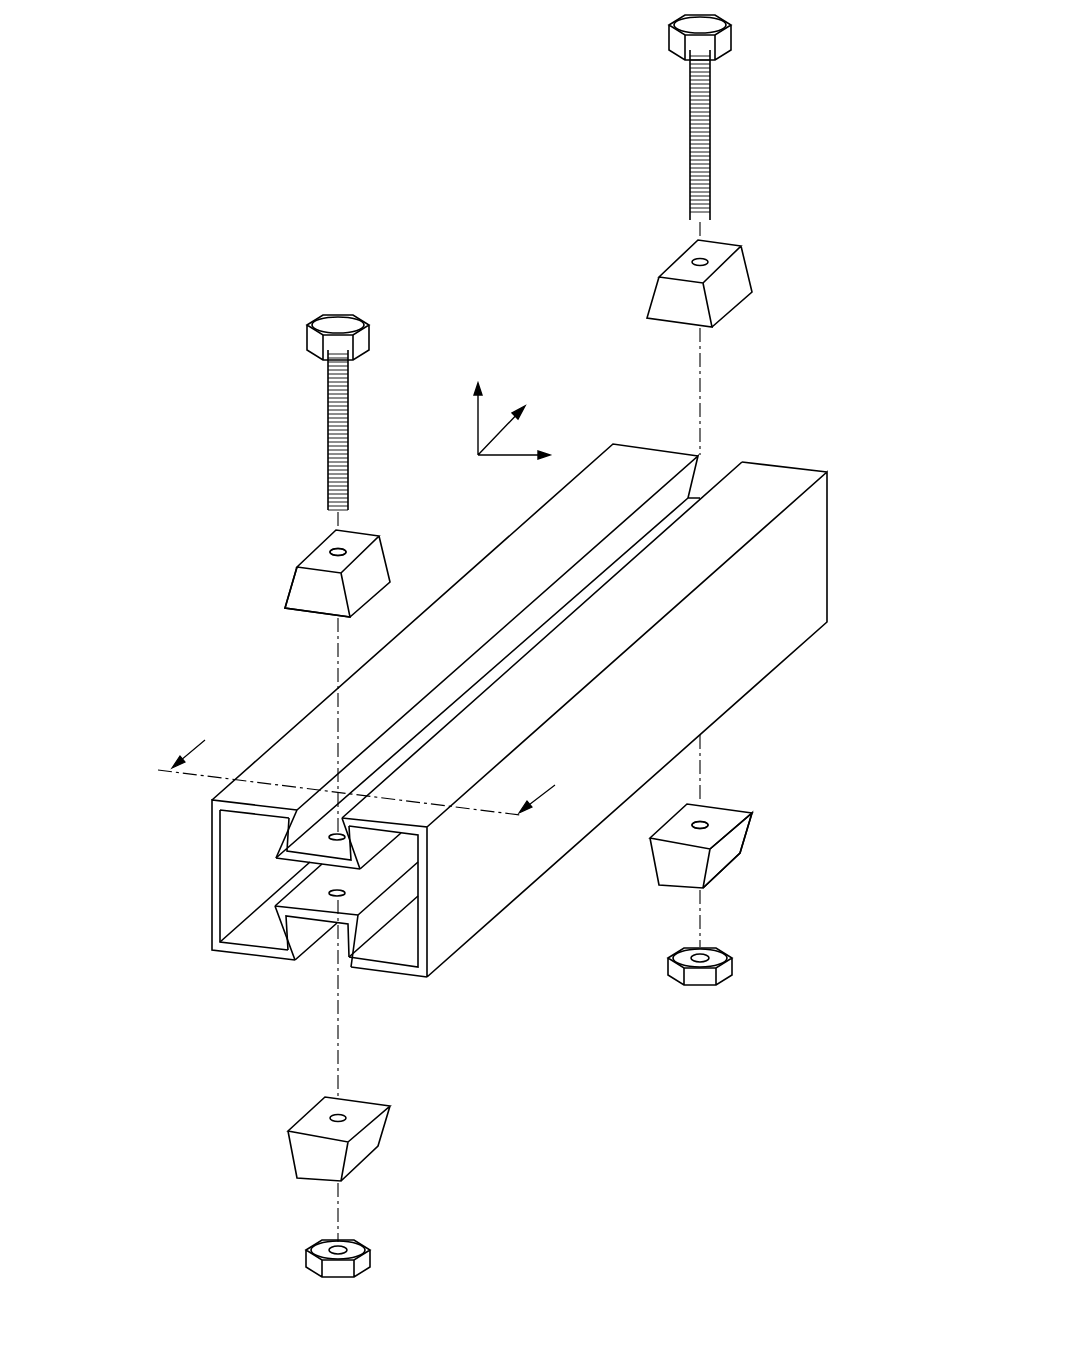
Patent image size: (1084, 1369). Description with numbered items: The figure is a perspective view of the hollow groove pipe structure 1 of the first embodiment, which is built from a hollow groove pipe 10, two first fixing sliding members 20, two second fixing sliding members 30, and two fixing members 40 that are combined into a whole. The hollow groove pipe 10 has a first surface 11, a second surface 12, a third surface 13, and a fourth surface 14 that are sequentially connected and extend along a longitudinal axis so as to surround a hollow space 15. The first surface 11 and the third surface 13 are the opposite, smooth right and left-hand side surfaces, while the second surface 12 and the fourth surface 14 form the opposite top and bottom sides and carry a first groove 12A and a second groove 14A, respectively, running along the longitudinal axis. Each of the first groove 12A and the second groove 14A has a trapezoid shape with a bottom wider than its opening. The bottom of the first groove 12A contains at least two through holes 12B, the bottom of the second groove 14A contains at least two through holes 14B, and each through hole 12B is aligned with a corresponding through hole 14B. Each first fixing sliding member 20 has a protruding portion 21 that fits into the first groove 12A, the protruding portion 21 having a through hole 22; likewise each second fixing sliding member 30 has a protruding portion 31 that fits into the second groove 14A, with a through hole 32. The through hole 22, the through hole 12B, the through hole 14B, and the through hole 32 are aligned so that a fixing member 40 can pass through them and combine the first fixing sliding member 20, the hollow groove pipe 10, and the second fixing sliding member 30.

The hollow groove pipe structure 1 is at (304, 172).
The hollow groove pipe 10 is at (768, 418).
The first surface 11 is at (780, 640).
The second surface 12 is at (782, 470).
The first groove 12A is at (318, 833).
The through hole 12B is at (318, 846).
The third surface 13 is at (208, 883).
The fourth surface 14 is at (254, 962).
The second groove 14A is at (318, 959).
The through hole 14B is at (344, 895).
The hollow space 15 is at (242, 893).
The first fixing sliding member 20 is at (672, 262).
The protruding portion 21 is at (356, 598).
The through hole 22 is at (342, 549).
The second fixing sliding member 30 is at (788, 738).
The protruding portion 31 is at (746, 816).
The through hole 32 is at (707, 822).
The fixing member 40 is at (690, 130).